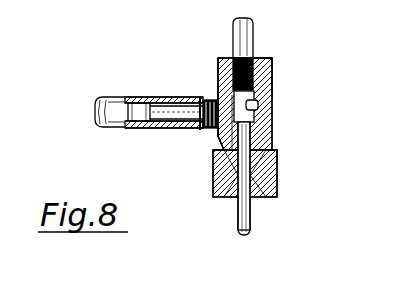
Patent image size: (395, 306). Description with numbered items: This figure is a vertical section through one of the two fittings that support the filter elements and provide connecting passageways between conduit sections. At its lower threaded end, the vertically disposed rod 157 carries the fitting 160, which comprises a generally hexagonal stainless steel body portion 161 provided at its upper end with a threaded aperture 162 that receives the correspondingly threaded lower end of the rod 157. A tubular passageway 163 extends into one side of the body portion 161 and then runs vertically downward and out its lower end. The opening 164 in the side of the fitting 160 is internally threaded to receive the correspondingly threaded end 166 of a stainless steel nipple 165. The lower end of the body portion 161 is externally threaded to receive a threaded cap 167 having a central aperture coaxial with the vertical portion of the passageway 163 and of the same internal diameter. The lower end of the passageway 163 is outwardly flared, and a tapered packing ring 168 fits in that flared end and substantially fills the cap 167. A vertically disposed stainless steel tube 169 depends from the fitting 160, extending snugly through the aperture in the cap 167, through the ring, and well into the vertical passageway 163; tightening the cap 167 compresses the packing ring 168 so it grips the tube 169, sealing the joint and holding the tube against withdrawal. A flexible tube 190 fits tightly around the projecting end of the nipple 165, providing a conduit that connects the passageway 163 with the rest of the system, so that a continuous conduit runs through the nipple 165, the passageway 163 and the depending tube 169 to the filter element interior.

The rod 157 is at (255, 38).
The fitting 160 is at (276, 98).
The body portion 161 is at (272, 133).
The threaded aperture 162 is at (272, 68).
The tubular passageway 163 is at (258, 110).
The opening 164 is at (218, 80).
The nipple 165 is at (193, 97).
The threaded end 166 is at (208, 127).
The cap 167 is at (277, 185).
The packing ring 168 is at (277, 163).
The tube 169 is at (252, 218).
The flexible tube 190 is at (99, 128).